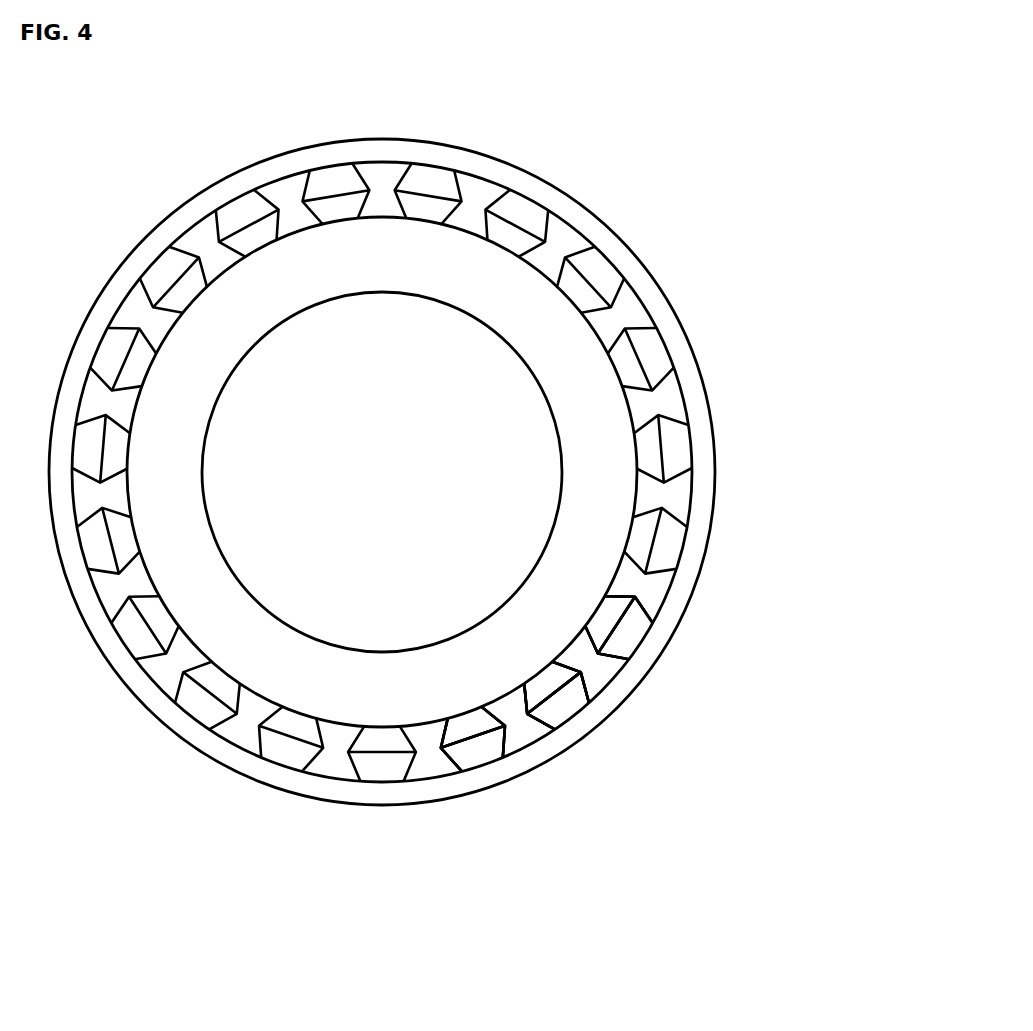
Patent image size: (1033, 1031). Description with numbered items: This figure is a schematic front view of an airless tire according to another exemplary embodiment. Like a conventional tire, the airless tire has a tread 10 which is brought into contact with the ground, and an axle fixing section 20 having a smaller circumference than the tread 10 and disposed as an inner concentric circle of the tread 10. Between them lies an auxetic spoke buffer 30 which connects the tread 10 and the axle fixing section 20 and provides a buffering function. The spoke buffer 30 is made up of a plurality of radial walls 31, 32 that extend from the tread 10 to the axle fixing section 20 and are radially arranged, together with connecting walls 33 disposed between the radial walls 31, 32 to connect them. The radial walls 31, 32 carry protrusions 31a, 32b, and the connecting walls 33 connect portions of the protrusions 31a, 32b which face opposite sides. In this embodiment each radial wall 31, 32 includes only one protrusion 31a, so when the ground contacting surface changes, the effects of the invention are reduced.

The tread 10 is at (417, 153).
The axle fixing section 20 is at (430, 263).
The auxetic spoke buffer 30 is at (189, 224).
The radial wall 31 is at (617, 702).
The protrusion 31a is at (536, 760).
The radial wall 32 is at (623, 675).
The protrusion 32b is at (494, 685).
The connecting wall 33 is at (625, 624).